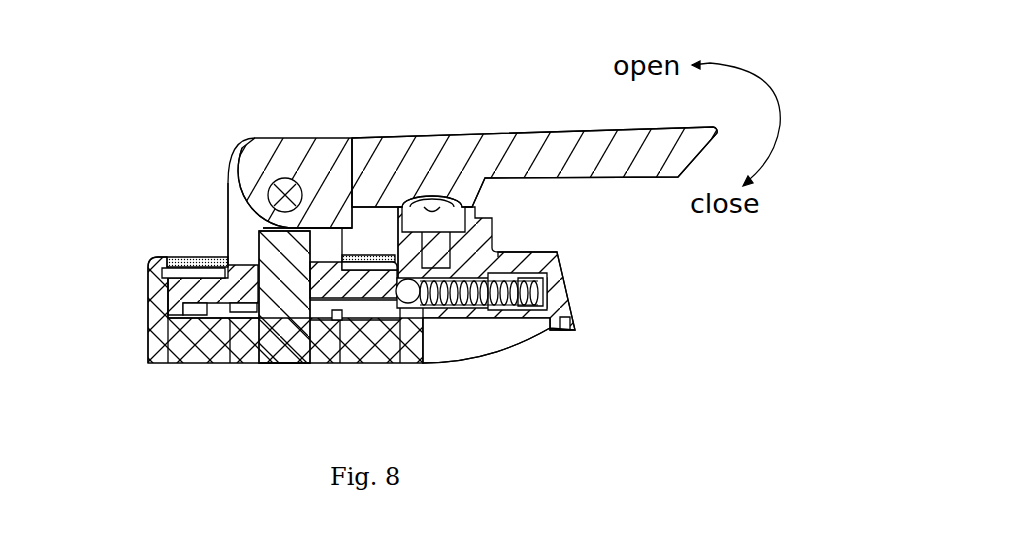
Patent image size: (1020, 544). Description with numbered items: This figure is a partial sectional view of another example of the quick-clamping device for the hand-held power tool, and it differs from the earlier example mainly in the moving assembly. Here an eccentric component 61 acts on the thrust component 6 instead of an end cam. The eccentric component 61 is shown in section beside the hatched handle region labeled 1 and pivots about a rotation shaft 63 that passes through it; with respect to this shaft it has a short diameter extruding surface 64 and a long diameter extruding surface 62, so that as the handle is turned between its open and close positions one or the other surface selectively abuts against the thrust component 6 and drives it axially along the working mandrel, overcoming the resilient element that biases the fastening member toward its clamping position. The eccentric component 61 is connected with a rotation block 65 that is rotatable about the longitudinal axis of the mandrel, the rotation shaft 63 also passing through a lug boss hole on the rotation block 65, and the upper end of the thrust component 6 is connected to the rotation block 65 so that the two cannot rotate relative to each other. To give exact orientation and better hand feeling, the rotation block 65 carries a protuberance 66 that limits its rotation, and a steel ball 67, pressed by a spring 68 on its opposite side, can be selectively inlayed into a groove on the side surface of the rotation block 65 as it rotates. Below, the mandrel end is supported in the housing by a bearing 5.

The handle lever 1 is at (523, 148).
The bearing 5 is at (188, 352).
The thrust component 6 is at (292, 345).
The eccentric component 61 is at (322, 178).
The long diameter extruding surface 62 is at (277, 146).
The rotation shaft 63 is at (282, 191).
The short diameter extruding surface 64 is at (282, 224).
The rotation block 65 is at (172, 283).
The protuberance 66 is at (175, 306).
The steel ball 67 is at (409, 301).
The spring 68 is at (500, 310).